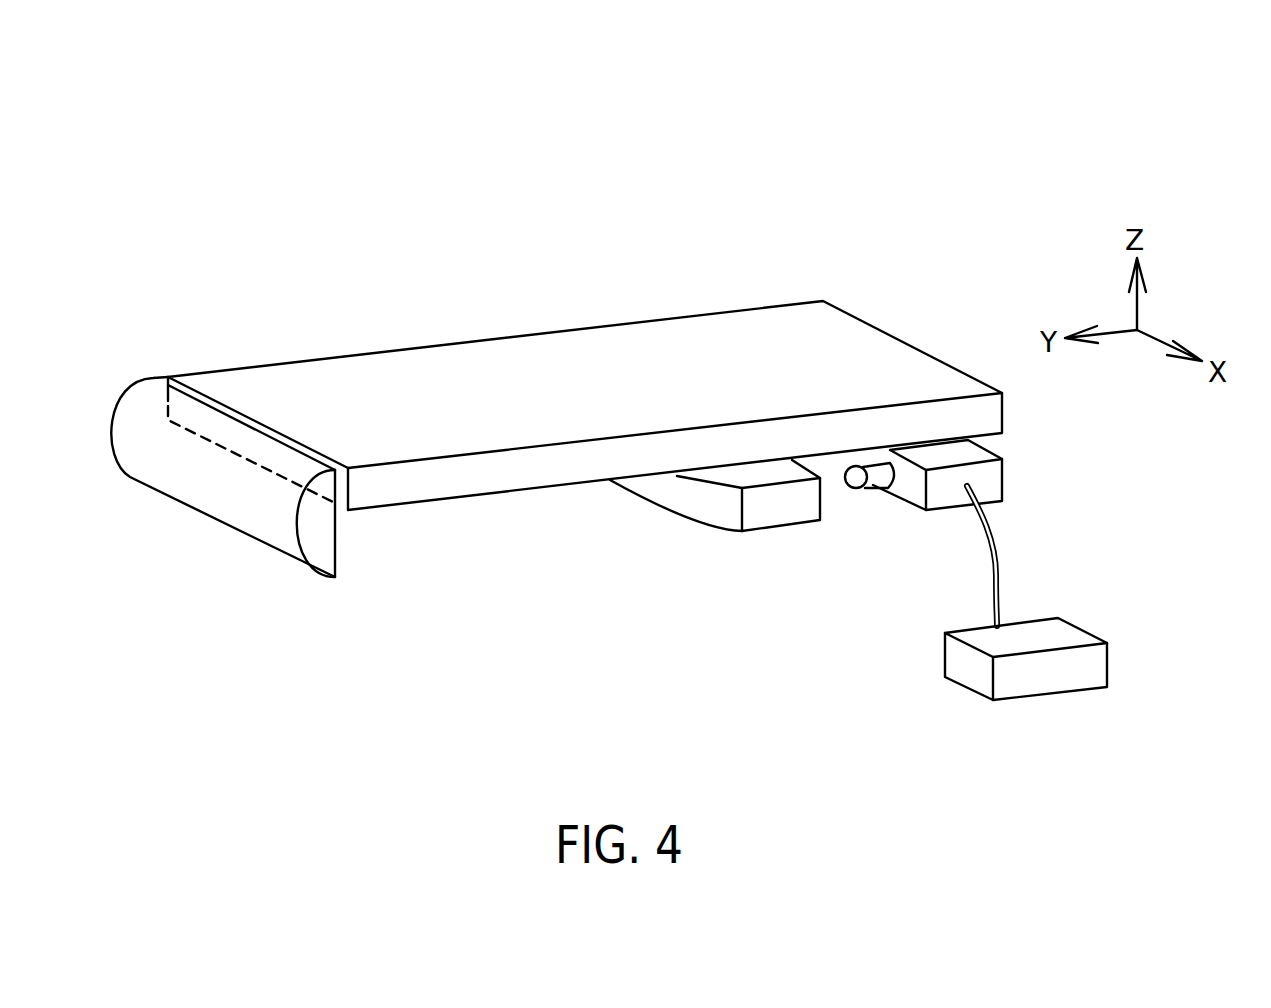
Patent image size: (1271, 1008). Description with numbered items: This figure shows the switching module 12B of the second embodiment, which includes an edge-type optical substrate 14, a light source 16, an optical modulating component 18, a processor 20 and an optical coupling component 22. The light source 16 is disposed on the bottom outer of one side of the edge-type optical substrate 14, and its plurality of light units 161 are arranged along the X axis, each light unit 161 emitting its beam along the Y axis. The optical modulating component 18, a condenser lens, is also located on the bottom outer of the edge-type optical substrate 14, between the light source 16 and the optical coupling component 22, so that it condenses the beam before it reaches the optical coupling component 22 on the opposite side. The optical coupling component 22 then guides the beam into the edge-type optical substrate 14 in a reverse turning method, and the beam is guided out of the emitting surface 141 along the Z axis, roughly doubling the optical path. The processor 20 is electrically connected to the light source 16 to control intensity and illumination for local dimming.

The switching module 12B is at (842, 218).
The edge-type optical substrate 14 is at (603, 345).
The emitting surface 141 is at (462, 375).
The light source 16 is at (983, 480).
The light unit 161 is at (873, 487).
The optical modulating component 18 is at (678, 502).
The processor 20 is at (1063, 637).
The optical coupling component 22 is at (212, 493).